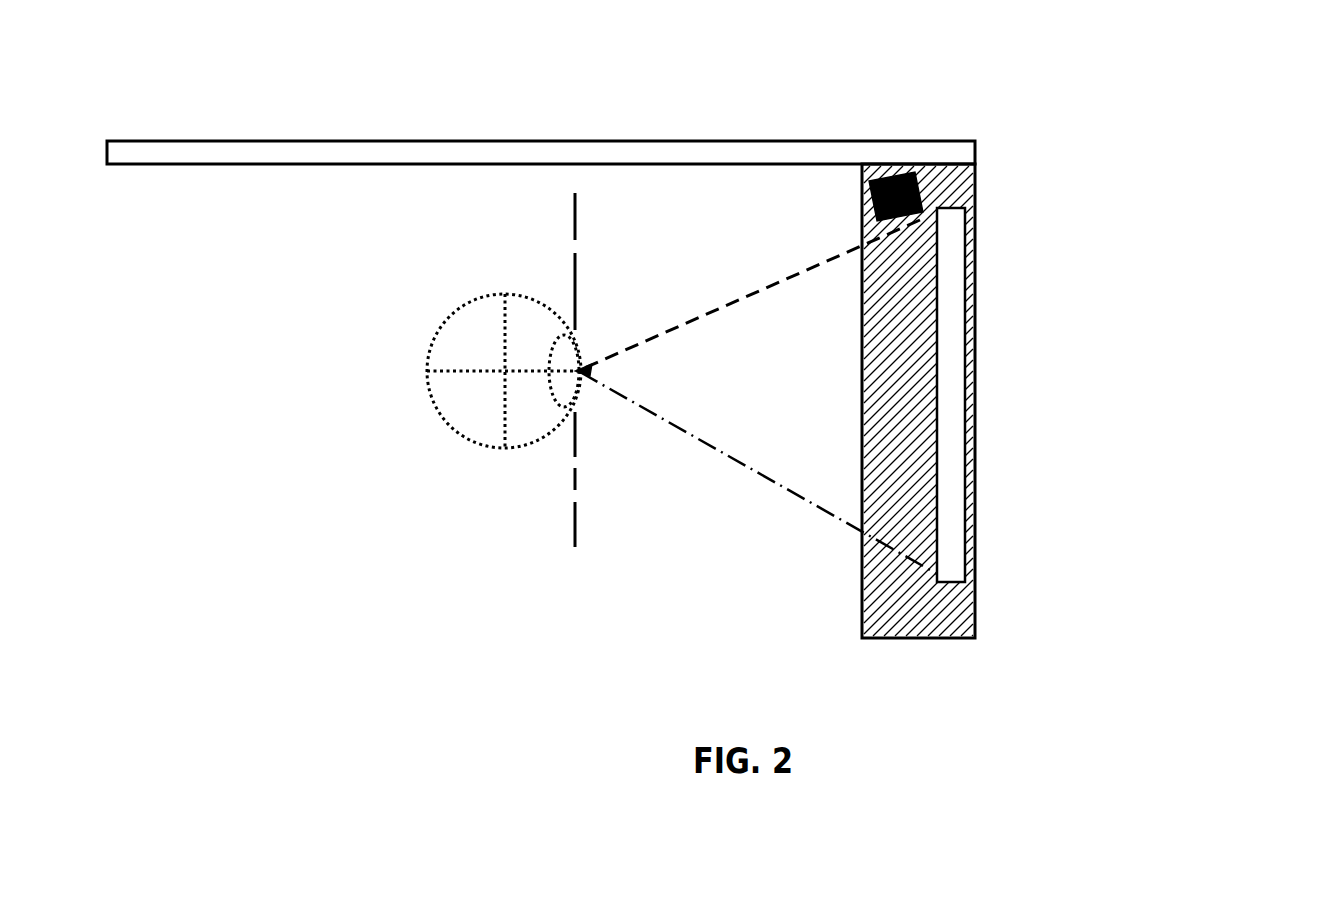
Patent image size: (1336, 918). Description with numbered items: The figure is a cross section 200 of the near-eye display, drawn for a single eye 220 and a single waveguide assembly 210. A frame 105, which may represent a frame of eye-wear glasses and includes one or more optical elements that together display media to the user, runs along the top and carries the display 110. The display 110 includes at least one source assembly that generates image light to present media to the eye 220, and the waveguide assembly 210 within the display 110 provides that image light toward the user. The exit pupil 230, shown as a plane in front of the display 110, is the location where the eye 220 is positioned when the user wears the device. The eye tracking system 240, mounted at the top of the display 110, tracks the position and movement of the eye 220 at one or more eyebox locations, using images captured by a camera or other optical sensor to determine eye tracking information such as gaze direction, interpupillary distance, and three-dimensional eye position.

The cross section 200 is at (283, 42).
The frame 105 is at (830, 139).
The display 110 is at (975, 517).
The waveguide assembly 210 is at (947, 282).
The eye 220 is at (468, 307).
The exit pupil 230 is at (572, 470).
The eye tracking system 240 is at (922, 192).